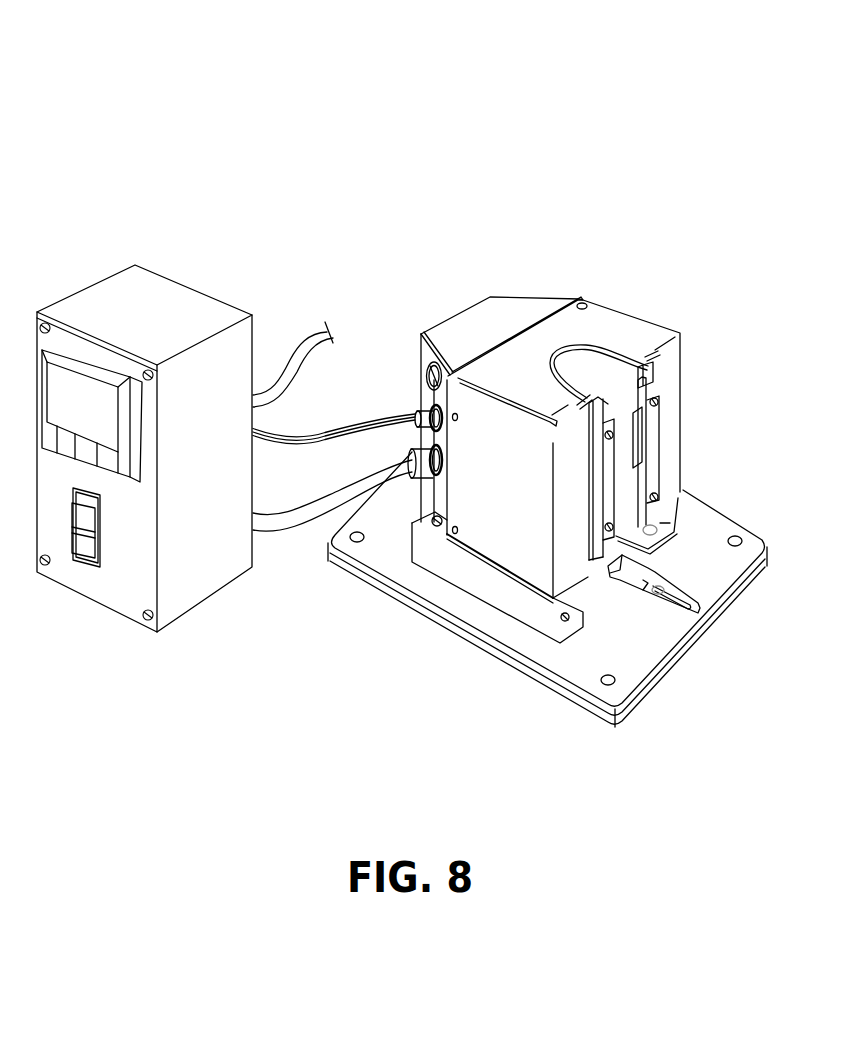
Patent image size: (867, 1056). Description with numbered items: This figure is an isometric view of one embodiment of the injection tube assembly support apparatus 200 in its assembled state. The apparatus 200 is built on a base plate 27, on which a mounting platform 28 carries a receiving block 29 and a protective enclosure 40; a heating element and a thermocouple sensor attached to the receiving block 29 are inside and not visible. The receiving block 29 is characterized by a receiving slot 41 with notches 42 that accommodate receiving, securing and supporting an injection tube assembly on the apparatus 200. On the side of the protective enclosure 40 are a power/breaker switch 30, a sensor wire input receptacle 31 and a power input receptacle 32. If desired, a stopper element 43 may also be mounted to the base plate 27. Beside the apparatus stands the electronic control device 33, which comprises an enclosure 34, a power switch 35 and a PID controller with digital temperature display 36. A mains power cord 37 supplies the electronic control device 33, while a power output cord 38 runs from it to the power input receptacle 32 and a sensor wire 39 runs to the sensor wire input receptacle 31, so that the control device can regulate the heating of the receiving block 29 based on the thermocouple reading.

The injection tube assembly support apparatus 200 is at (765, 100).
The base plate 27 is at (588, 724).
The mounting platform 28 is at (418, 557).
The receiving block 29 is at (643, 358).
The power/breaker switch 30 is at (435, 362).
The sensor wire input receptacle 31 is at (432, 404).
The power input receptacle 32 is at (435, 482).
The electronic control device 33 is at (145, 220).
The enclosure 34 is at (213, 318).
The power switch 35 is at (83, 568).
The PID controller with digital temperature display 36 is at (85, 402).
The mains power cord 37 is at (305, 333).
The power output cord 38 is at (298, 532).
The sensor wire 39 is at (317, 435).
The protective enclosure 40 is at (523, 360).
The receiving slot 41 is at (623, 390).
The notches 42 is at (638, 440).
The stopper element 43 is at (667, 612).